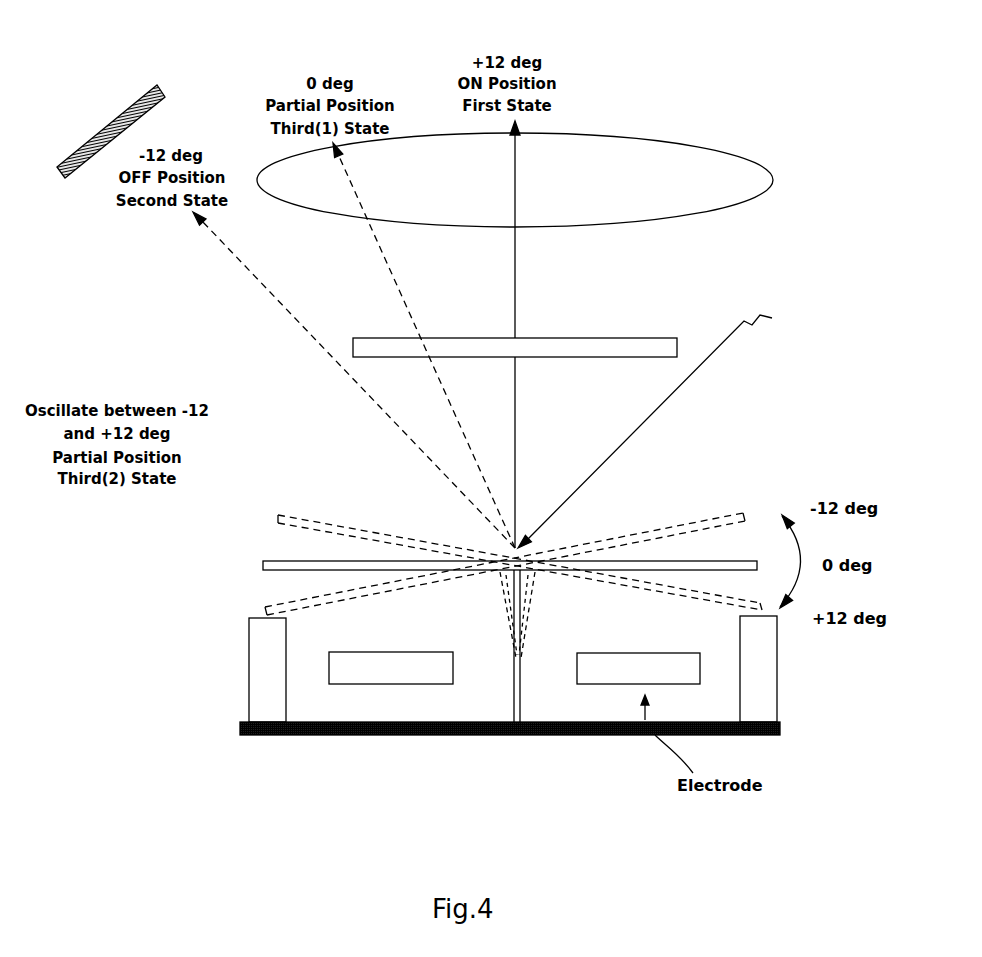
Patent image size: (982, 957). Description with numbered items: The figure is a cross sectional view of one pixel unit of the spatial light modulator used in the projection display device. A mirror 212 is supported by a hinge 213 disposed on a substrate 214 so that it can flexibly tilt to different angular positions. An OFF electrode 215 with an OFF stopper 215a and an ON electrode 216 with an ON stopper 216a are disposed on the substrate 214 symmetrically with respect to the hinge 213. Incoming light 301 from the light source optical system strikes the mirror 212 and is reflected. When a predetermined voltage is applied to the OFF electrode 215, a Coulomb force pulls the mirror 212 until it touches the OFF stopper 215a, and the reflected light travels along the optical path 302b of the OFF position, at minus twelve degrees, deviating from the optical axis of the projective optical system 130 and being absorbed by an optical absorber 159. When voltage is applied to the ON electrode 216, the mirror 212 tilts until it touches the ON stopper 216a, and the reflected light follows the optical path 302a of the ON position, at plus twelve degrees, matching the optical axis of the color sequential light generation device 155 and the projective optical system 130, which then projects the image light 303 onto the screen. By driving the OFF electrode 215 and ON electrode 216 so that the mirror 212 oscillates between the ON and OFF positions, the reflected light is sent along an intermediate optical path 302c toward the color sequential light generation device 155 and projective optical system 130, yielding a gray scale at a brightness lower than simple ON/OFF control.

The projective optical system 130 is at (750, 180).
The optical absorber 159 is at (107, 125).
The color sequential light generation device 155 is at (634, 345).
The image light 303 is at (540, 120).
The optical path of the ON position 302a is at (517, 317).
The optical path between ON and OFF positions 302c is at (402, 293).
The optical path of the OFF position 302b is at (270, 290).
The incoming light 301 is at (710, 360).
The mirror 212 is at (263, 566).
The hinge 213 is at (522, 665).
The OFF stopper 215a is at (257, 665).
The ON stopper 216a is at (768, 678).
The OFF electrode 215 is at (382, 677).
The ON electrode 216 is at (682, 678).
The substrate 214 is at (483, 738).